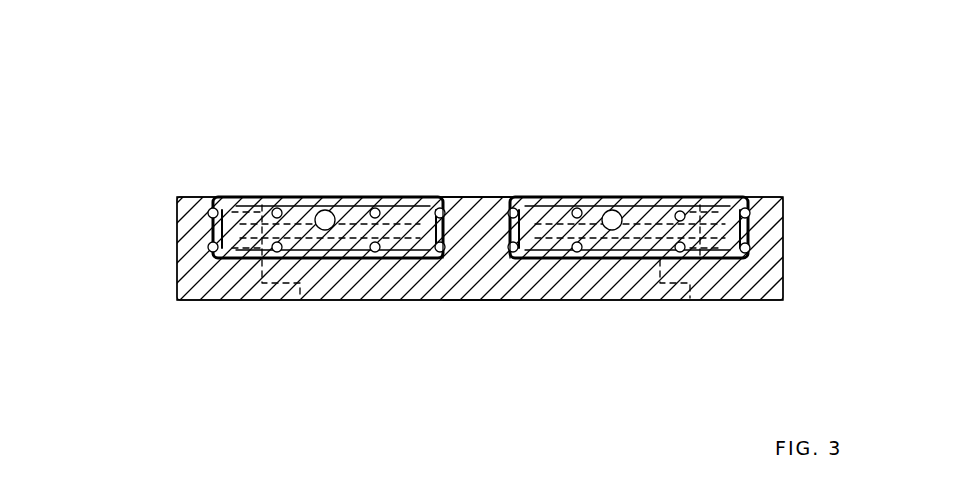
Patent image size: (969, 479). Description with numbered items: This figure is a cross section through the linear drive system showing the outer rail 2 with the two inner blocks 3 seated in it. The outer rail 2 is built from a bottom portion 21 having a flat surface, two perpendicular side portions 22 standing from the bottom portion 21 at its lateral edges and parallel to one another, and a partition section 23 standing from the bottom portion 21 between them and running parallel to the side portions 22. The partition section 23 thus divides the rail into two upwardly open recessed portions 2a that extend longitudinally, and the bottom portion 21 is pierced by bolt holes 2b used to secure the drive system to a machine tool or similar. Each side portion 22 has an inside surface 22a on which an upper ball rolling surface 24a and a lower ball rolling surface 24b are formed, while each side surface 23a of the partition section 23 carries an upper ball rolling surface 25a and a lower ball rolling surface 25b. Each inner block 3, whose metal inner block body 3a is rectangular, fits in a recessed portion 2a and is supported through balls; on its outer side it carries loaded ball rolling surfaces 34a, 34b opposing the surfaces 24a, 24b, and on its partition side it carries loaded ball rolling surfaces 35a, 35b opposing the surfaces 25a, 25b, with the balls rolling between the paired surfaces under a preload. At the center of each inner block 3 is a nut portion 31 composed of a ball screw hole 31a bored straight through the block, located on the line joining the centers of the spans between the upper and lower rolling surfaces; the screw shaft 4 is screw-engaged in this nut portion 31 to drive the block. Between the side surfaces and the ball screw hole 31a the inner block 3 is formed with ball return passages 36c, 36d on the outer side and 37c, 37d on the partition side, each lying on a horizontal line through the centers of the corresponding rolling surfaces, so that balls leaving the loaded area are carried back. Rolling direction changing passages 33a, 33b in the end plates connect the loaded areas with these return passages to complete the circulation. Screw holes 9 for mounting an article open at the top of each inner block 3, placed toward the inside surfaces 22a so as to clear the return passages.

The outer rail 2 is at (172, 226).
The perpendicular side portion 22 is at (177, 270).
The ball rolling surface 24a is at (210, 198).
The ball rolling surface 24b is at (178, 300).
The inside surface 22a is at (222, 198).
The loaded ball rolling surface 34a is at (228, 198).
The loaded ball rolling surface 34b is at (218, 258).
The rolling direction changing passage 33a is at (255, 198).
The rolling direction changing passage 33b is at (232, 258).
The ball return passage 36c is at (268, 198).
The ball return passage 36d is at (285, 198).
The screw hole 9 is at (266, 198).
The screw shaft 4 is at (322, 198).
The nut portion 31 is at (345, 198).
The ball screw hole 31a is at (358, 198).
The inner block 3 is at (372, 192).
The ball return passage 37c is at (395, 198).
The ball return passage 37d is at (437, 198).
The loaded ball rolling surface 35a is at (433, 198).
The loaded ball rolling surface 35b is at (415, 300).
The side surface 23a is at (445, 198).
The partition section 23 is at (482, 200).
The ball rolling surface 25a is at (507, 198).
The ball rolling surface 25b is at (440, 300).
The bottom portion 21 is at (488, 292).
The recessed portion 2a is at (337, 300).
The bolt hole 2b is at (263, 300).
The inner block body 3a is at (303, 300).